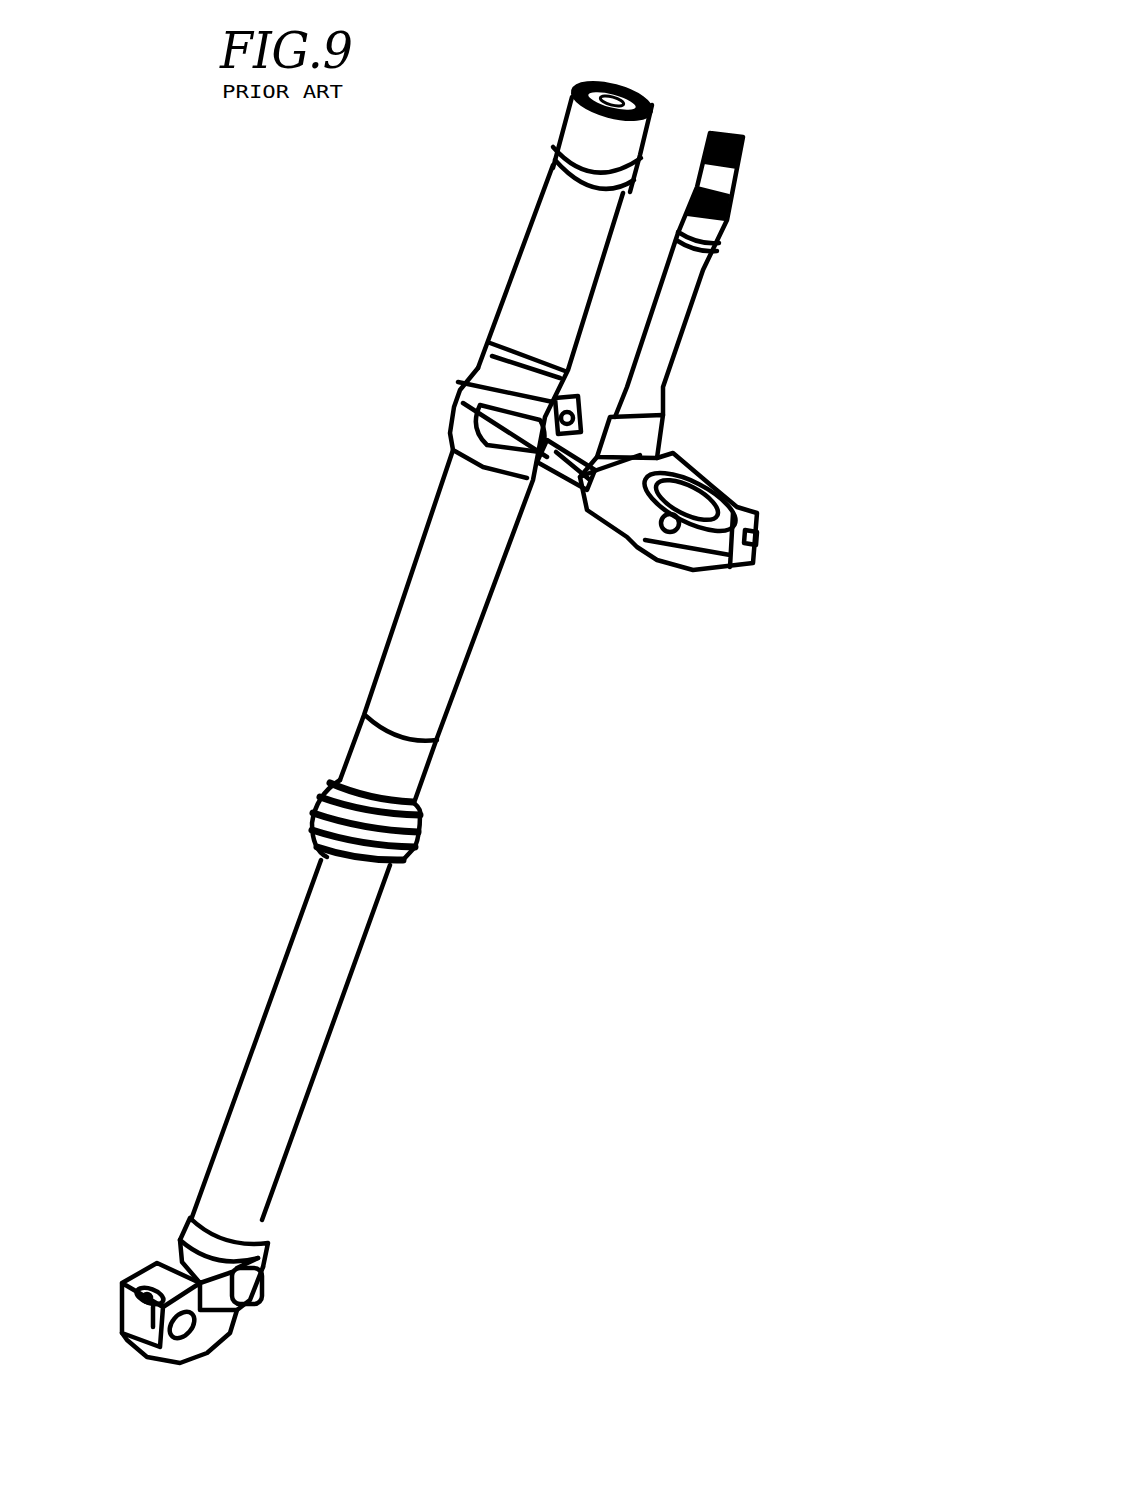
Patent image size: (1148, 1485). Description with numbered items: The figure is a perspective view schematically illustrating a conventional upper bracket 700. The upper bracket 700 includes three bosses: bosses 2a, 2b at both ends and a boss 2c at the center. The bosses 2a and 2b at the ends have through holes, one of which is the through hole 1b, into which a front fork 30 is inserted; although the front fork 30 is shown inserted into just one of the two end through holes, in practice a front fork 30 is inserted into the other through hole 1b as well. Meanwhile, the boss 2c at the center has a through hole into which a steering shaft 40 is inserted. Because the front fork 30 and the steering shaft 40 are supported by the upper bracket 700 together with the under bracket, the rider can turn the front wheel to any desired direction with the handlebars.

The front fork 30 is at (433, 543).
The steering shaft 40 is at (680, 297).
The upper bracket 700 is at (640, 414).
The through hole 1b is at (640, 414).
The boss 2a is at (478, 370).
The boss 2b is at (733, 502).
The boss 2c is at (607, 437).